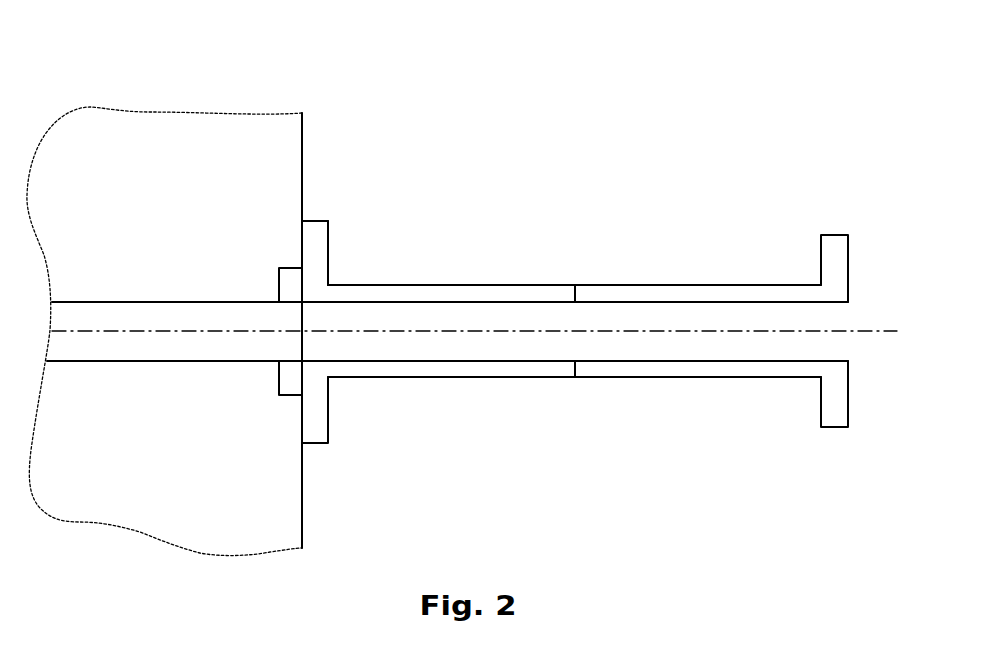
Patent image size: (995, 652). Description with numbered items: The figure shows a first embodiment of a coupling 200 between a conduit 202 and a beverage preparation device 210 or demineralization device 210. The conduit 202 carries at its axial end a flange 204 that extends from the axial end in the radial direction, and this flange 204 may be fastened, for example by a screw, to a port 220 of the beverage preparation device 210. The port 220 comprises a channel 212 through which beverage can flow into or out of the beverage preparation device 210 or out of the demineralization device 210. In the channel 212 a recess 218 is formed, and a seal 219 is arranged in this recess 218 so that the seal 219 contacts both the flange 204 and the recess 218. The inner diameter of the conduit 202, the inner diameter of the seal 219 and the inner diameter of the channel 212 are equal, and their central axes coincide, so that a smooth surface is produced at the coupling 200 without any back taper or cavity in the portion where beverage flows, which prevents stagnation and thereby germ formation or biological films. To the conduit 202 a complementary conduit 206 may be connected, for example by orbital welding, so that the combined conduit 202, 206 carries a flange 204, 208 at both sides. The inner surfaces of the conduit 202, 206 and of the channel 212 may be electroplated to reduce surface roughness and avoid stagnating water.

The coupling 200 is at (462, 55).
The conduit 202 is at (474, 292).
The flange 204 is at (321, 256).
The complementary conduit 206 is at (725, 292).
The flange 208 is at (833, 242).
The beverage preparation device 210 is at (291, 502).
The channel 212 is at (133, 310).
The recess 218 is at (275, 250).
The seal 219 is at (279, 385).
The port 220 is at (333, 198).